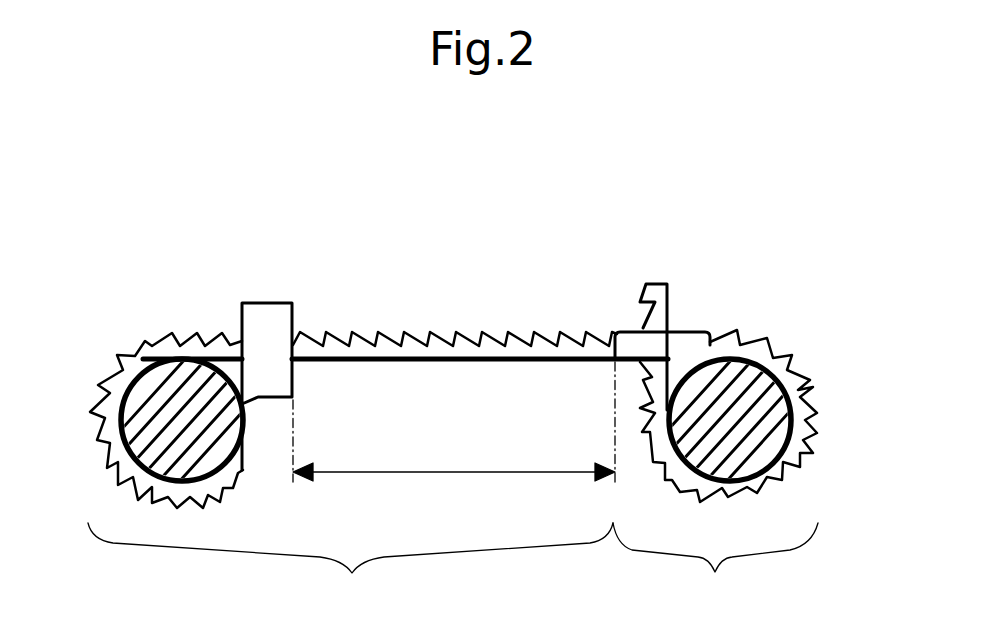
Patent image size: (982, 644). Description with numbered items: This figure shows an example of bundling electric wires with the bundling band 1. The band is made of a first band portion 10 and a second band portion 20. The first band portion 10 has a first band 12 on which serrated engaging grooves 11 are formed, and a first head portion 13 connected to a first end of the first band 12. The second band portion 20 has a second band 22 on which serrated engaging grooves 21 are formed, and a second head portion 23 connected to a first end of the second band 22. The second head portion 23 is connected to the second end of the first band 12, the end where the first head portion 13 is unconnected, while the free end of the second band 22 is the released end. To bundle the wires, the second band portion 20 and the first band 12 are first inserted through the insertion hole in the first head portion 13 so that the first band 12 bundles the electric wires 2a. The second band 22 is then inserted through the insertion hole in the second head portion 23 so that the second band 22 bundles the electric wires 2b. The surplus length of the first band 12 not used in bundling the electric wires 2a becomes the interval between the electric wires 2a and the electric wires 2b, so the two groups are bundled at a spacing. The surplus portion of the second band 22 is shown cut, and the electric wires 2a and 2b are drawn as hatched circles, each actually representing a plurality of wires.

The bundling band 1 is at (518, 300).
The electric wires 2a is at (168, 442).
The electric wires 2b is at (785, 358).
The first band portion 10 is at (320, 440).
The engaging grooves 11 is at (152, 342).
The first band 12 is at (440, 350).
The first head portion 13 is at (280, 317).
The second band portion 20 is at (754, 442).
The engaging grooves 21 is at (808, 463).
The second band 22 is at (817, 388).
The second head portion 23 is at (698, 328).